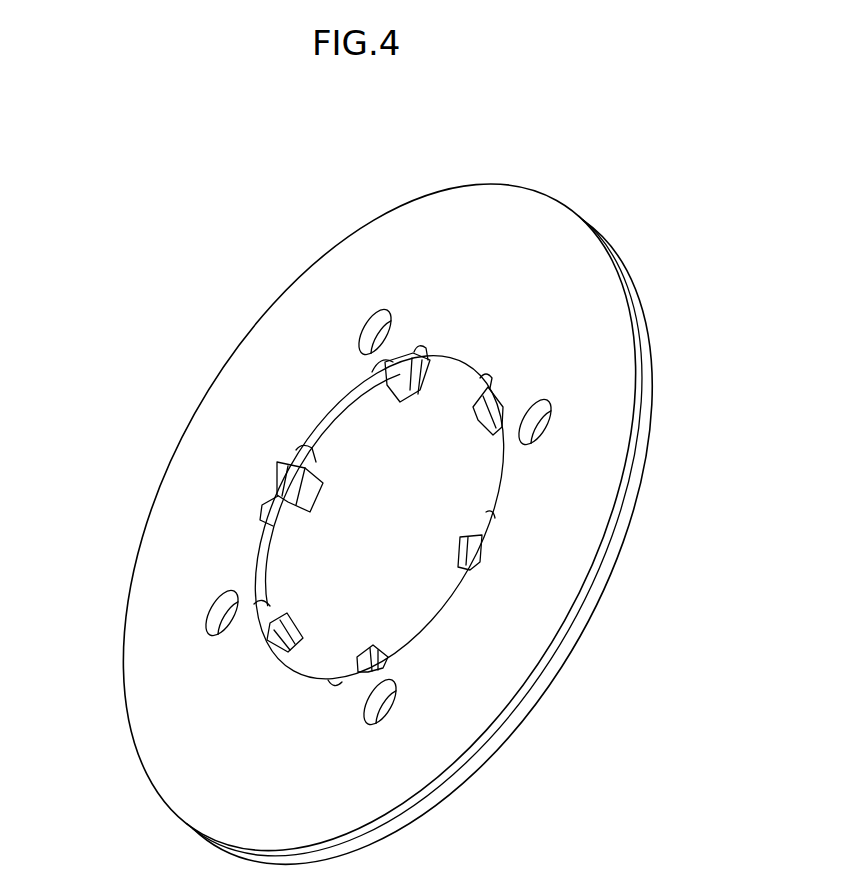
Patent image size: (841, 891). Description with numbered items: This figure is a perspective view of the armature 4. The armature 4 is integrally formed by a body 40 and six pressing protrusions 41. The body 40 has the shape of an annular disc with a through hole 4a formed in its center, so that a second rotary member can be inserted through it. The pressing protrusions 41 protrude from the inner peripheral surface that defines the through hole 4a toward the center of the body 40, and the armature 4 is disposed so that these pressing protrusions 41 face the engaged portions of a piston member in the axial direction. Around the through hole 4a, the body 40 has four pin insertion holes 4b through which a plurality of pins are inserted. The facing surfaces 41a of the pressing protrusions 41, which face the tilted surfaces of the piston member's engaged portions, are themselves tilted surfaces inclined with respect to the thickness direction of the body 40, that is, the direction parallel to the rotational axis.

The armature 4 is at (591, 192).
The body 40 is at (263, 345).
The through hole 4a is at (302, 577).
The pin insertion holes 4b is at (363, 315).
The pressing protrusions 41 is at (318, 495).
The facing surfaces 41a is at (295, 483).